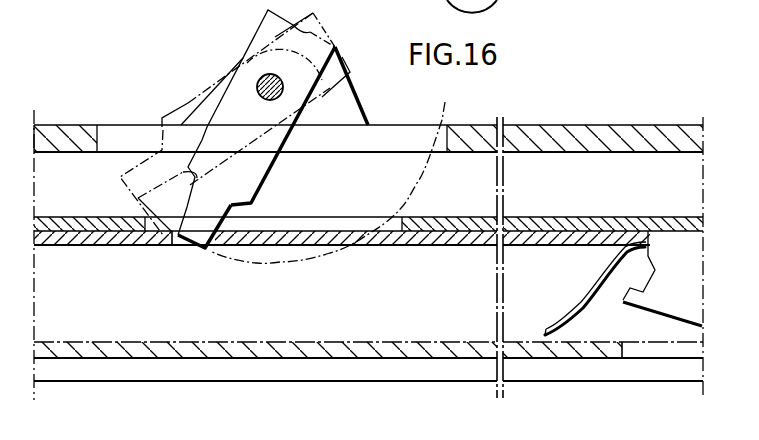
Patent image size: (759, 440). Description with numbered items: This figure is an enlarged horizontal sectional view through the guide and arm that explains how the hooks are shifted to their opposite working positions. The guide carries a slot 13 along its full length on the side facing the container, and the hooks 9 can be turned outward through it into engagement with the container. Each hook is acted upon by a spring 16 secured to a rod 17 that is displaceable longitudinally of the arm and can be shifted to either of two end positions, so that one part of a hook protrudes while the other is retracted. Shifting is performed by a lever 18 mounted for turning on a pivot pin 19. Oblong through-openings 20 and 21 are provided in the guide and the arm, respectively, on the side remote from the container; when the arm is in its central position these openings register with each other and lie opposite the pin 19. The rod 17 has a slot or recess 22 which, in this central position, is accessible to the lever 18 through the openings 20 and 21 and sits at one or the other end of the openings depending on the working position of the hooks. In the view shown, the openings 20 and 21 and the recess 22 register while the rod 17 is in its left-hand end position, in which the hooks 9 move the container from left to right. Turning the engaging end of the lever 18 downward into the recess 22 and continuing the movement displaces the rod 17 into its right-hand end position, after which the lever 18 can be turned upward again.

The hook 9 is at (668, 305).
The slot 13 is at (350, 381).
The spring 16 is at (585, 294).
The rod 17 is at (407, 245).
The lever 18 is at (336, 50).
The pivot pin 19 is at (257, 82).
The oblong through-opening 20 is at (400, 137).
The oblong through-opening 21 is at (342, 218).
The recess 22 is at (217, 248).